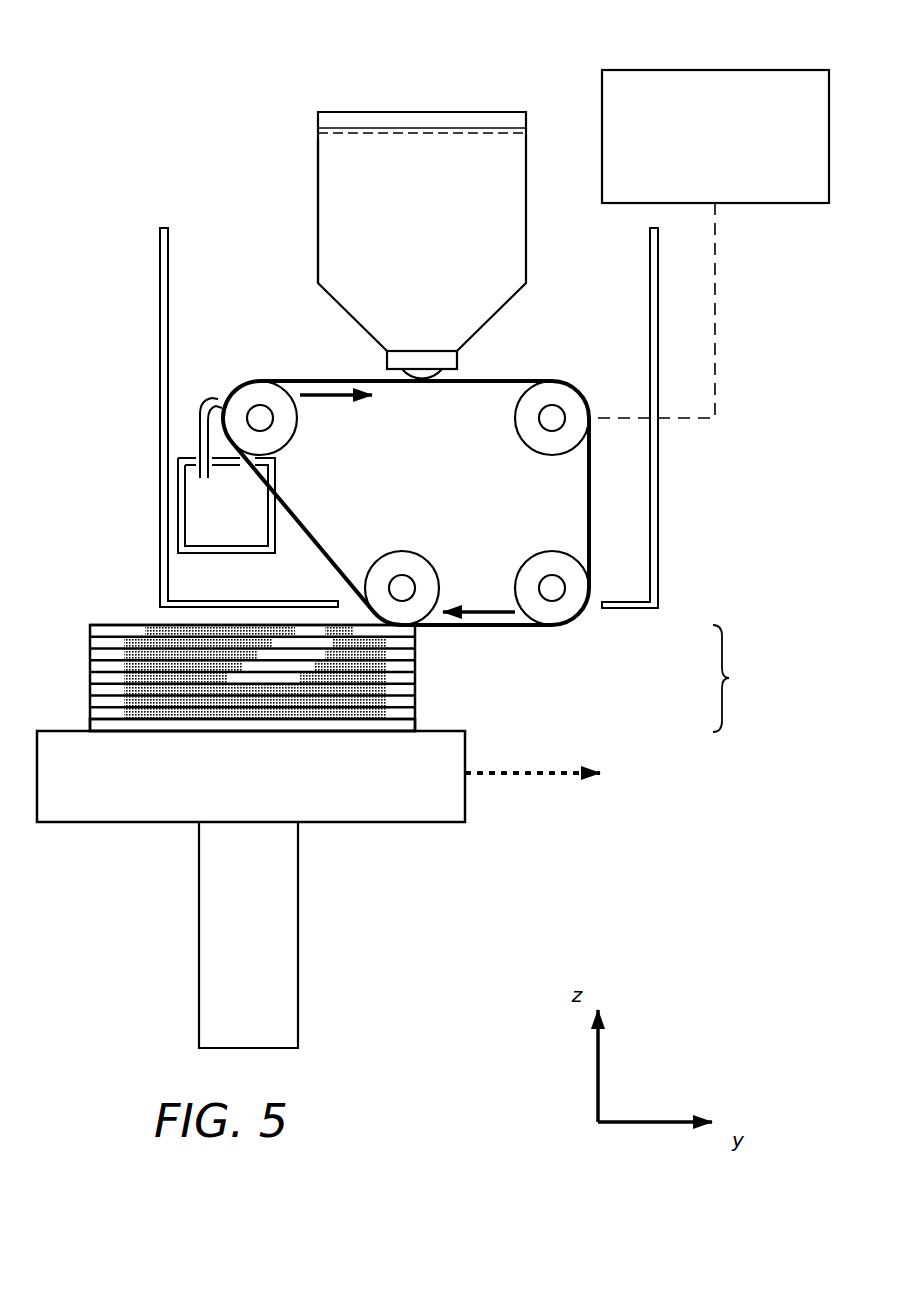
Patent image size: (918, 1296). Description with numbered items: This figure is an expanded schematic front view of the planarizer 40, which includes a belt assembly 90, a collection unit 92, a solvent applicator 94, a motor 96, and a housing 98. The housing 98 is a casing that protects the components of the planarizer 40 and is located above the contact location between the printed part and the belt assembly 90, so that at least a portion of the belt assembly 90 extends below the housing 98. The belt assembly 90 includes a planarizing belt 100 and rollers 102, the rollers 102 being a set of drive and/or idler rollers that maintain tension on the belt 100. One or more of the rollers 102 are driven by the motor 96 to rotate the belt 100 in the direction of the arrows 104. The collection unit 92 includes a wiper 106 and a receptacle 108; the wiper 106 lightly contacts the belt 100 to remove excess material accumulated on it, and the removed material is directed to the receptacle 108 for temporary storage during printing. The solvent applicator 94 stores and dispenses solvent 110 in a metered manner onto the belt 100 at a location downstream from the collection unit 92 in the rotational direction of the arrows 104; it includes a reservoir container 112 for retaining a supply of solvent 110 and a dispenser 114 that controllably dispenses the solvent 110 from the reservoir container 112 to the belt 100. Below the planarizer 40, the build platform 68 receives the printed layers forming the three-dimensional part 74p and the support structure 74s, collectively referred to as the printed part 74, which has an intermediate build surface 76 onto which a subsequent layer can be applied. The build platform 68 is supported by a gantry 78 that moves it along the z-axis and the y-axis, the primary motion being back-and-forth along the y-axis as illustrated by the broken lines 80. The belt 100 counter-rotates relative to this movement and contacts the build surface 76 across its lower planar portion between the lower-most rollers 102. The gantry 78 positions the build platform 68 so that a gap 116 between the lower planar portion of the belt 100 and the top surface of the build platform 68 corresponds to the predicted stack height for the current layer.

The planarizer 40 is at (158, 66).
The build platform 68 is at (150, 822).
The 3D part 74 is at (273, 638).
The 3D part 74p is at (365, 666).
The support structure 74s is at (407, 712).
The intermediate build surface 76 is at (130, 622).
The gantry 78 is at (298, 985).
The broken lines 80 is at (548, 780).
The belt assembly 90 is at (598, 636).
The collection unit 92 is at (165, 472).
The solvent applicator 94 is at (308, 198).
The motor 96 is at (758, 203).
The housing 98 is at (160, 366).
The planarizing belt 100 is at (322, 378).
The rollers 102 is at (290, 445).
The arrows 104 is at (335, 398).
The wiper 106 is at (212, 398).
The receptacle 108 is at (215, 553).
The solvent 110 is at (420, 219).
The reservoir container 112 is at (318, 256).
The dispenser 114 is at (460, 366).
The gap 116 is at (740, 678).